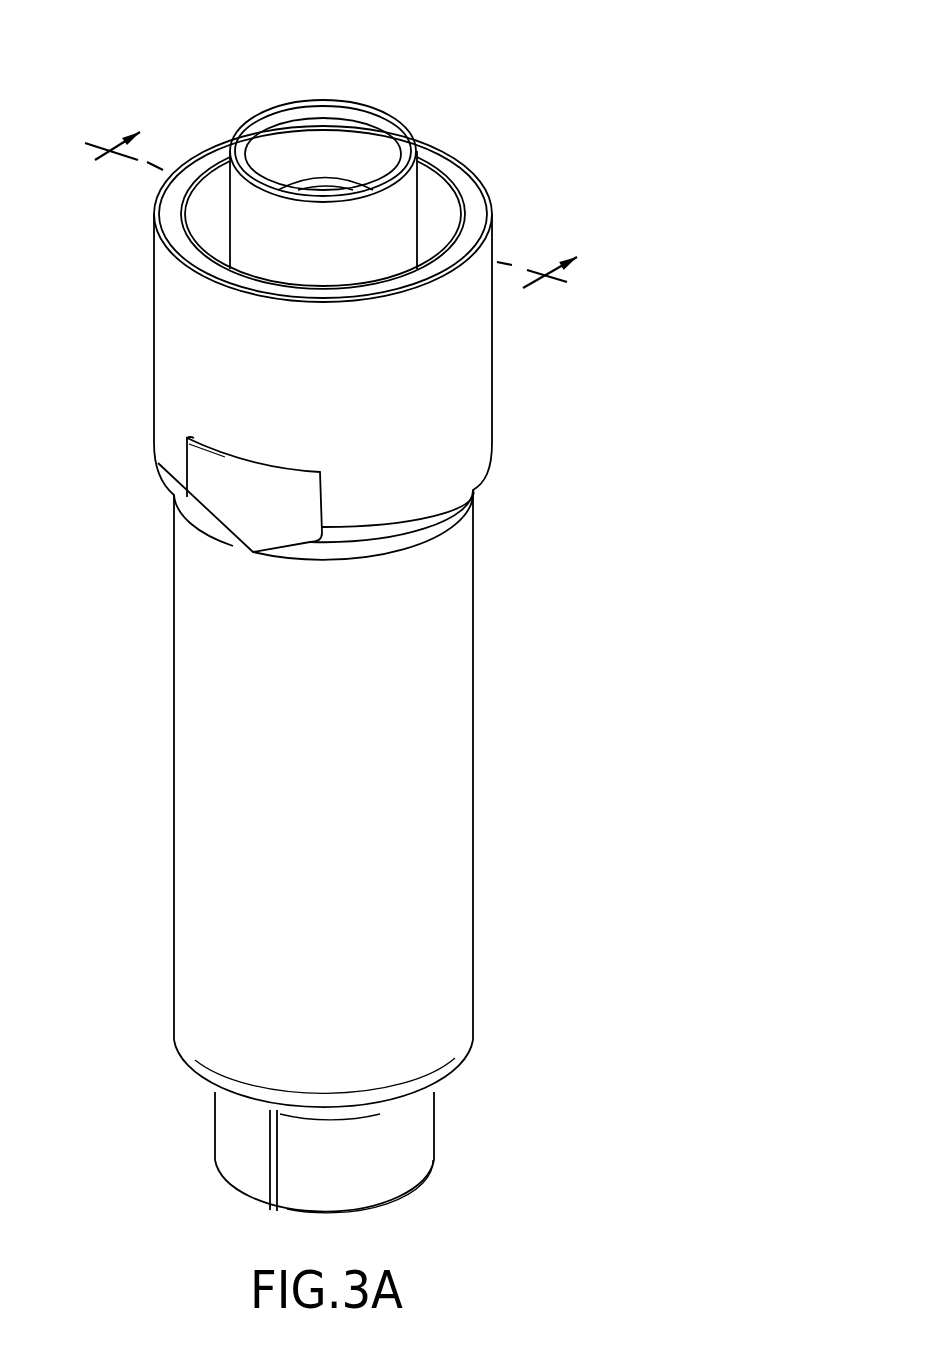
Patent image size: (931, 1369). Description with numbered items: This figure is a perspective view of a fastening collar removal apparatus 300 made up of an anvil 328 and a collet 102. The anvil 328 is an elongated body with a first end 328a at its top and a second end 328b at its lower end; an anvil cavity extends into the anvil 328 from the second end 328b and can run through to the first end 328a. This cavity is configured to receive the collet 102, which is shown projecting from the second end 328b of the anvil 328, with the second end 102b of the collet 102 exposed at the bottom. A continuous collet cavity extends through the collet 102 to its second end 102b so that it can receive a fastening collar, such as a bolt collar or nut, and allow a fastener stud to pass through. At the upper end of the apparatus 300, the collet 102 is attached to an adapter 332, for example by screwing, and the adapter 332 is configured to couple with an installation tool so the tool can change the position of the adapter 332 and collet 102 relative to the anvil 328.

The fastening collar removal apparatus 300 is at (545, 85).
The anvil 328 is at (447, 768).
The first end 328a is at (403, 278).
The second end 328b is at (463, 1063).
The adapter 332 is at (330, 272).
The collet 102 is at (398, 1137).
The second end 102b is at (407, 1197).